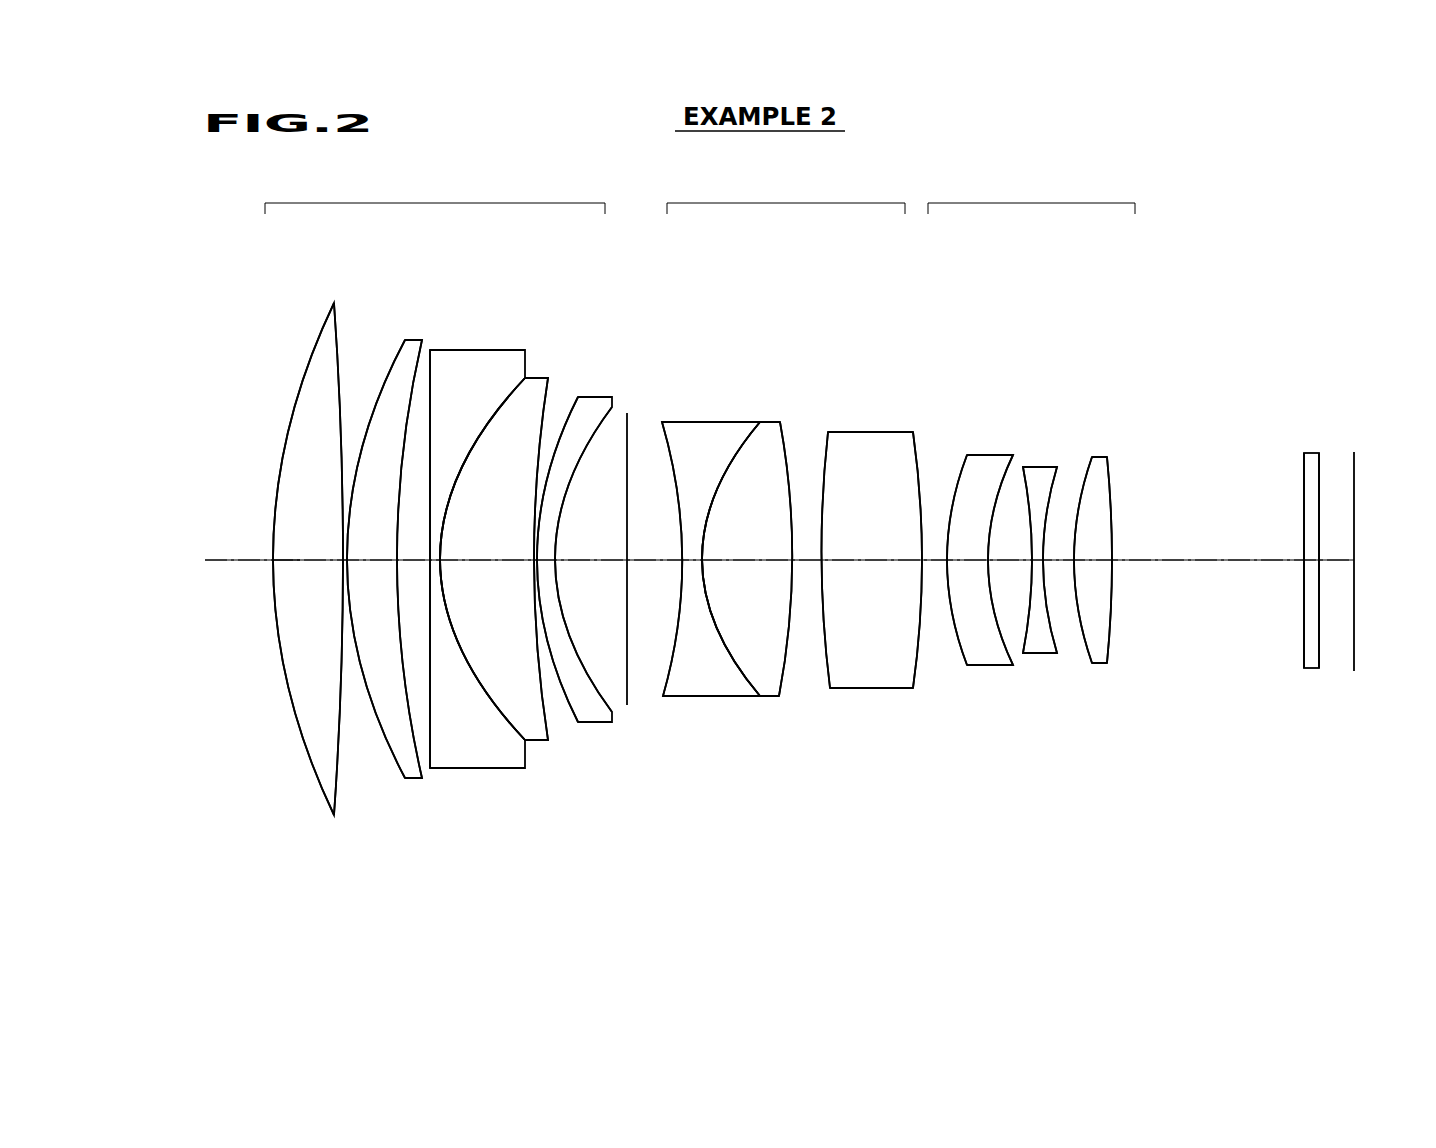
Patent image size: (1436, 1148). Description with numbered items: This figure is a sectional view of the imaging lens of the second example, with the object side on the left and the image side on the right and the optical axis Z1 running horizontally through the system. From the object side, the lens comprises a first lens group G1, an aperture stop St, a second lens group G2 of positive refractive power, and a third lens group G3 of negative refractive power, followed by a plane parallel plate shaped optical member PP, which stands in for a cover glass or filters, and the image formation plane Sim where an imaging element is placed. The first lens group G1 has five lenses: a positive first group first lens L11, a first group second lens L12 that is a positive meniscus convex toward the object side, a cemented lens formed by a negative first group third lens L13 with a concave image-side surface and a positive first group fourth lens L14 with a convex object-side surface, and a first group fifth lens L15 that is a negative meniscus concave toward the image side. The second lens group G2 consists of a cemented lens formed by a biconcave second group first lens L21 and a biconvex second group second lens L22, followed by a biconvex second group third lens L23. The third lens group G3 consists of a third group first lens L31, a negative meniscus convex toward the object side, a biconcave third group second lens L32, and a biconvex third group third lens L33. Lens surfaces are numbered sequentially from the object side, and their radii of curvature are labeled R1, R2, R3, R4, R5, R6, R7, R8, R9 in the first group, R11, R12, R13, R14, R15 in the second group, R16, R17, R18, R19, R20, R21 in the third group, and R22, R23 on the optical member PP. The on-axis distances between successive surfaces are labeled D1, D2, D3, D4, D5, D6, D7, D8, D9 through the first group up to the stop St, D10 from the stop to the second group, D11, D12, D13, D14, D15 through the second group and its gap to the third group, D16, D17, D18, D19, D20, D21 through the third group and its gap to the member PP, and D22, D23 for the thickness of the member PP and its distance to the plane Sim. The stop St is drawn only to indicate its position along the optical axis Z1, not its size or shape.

The optical axis Z1 is at (235, 558).
The first lens group G1 is at (435, 194).
The second lens group G2 is at (786, 194).
The third lens group G3 is at (1031, 194).
The first group first lens L11 is at (327, 332).
The first group second lens L12 is at (405, 357).
The first group third lens L13 is at (477, 360).
The first group fourth lens L14 is at (537, 387).
The first group fifth lens L15 is at (592, 407).
The second group first lens L21 is at (702, 422).
The second group second lens L22 is at (770, 423).
The second group third lens L23 is at (878, 432).
The third group first lens L31 is at (975, 455).
The third group second lens L32 is at (1038, 467).
The third group third lens L33 is at (1097, 457).
The aperture stop St is at (630, 413).
The plane parallel plate shaped optical member PP is at (1310, 453).
The image formation plane Sim is at (1354, 465).
The first surface distance D1 is at (308, 548).
The second surface distance D2 is at (338, 545).
The third surface distance D3 is at (372, 548).
The fourth surface distance D4 is at (415, 557).
The fifth surface distance D5 is at (438, 557).
The sixth surface distance D6 is at (487, 548).
The seventh surface distance D7 is at (533, 556).
The eighth surface distance D8 is at (545, 548).
The ninth surface distance D9 is at (591, 548).
The tenth surface distance D10 is at (654, 546).
The eleventh surface distance D11 is at (693, 556).
The twelfth surface distance D12 is at (747, 546).
The thirteenth surface distance D13 is at (805, 557).
The fourteenth surface distance D14 is at (872, 546).
The fifteenth surface distance D15 is at (933, 556).
The sixteenth surface distance D16 is at (968, 556).
The seventeenth surface distance D17 is at (1009, 556).
The eighteenth surface distance D18 is at (1040, 556).
The nineteenth surface distance D19 is at (1062, 556).
The twentieth surface distance D20 is at (1093, 556).
The twenty-first surface distance D21 is at (1208, 548).
The twenty-second surface distance D22 is at (1306, 557).
The twenty-third surface distance D23 is at (1338, 557).
The first lens surface R1 is at (305, 753).
The second lens surface R2 is at (342, 790).
The third lens surface R3 is at (392, 753).
The fourth lens surface R4 is at (412, 720).
The fifth lens surface R5 is at (430, 615).
The sixth lens surface R6 is at (471, 670).
The seventh lens surface R7 is at (546, 740).
The eighth lens surface R8 is at (548, 683).
The ninth lens surface R9 is at (613, 710).
The eleventh lens surface R11 is at (663, 690).
The twelfth lens surface R12 is at (737, 670).
The thirteenth lens surface R13 is at (787, 660).
The fourteenth lens surface R14 is at (822, 657).
The fifteenth lens surface R15 is at (918, 690).
The sixteenth lens surface R16 is at (958, 648).
The seventeenth lens surface R17 is at (1012, 660).
The eighteenth lens surface R18 is at (1023, 652).
The nineteenth lens surface R19 is at (1055, 642).
The twentieth lens surface R20 is at (1092, 662).
The twenty-first lens surface R21 is at (1113, 650).
The twenty-second surface R22 is at (1303, 660).
The twenty-third surface R23 is at (1322, 660).